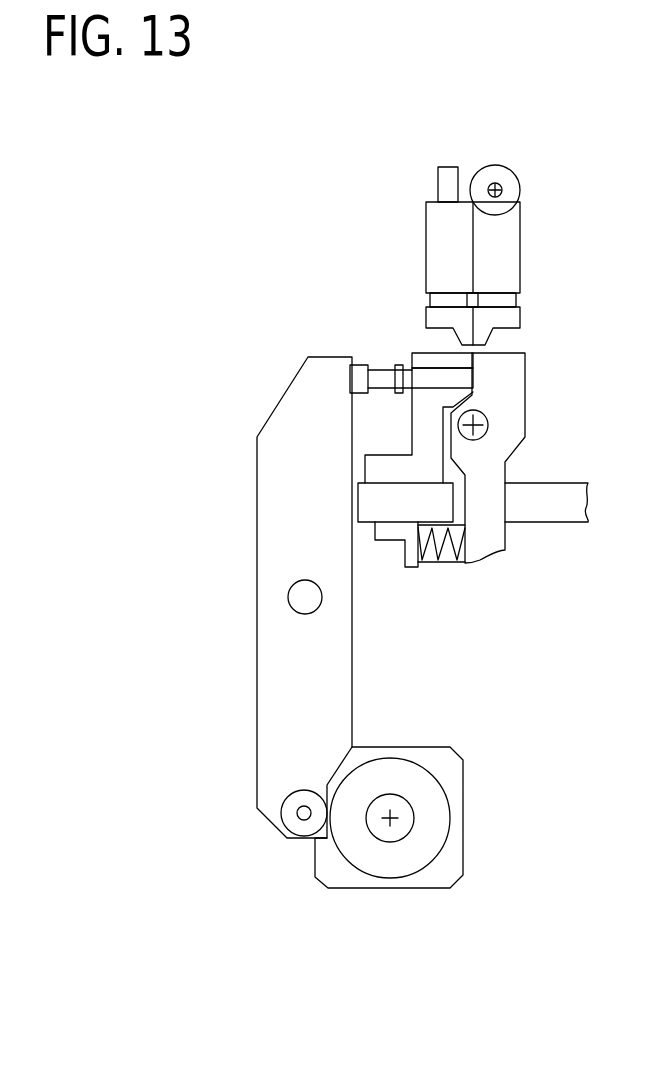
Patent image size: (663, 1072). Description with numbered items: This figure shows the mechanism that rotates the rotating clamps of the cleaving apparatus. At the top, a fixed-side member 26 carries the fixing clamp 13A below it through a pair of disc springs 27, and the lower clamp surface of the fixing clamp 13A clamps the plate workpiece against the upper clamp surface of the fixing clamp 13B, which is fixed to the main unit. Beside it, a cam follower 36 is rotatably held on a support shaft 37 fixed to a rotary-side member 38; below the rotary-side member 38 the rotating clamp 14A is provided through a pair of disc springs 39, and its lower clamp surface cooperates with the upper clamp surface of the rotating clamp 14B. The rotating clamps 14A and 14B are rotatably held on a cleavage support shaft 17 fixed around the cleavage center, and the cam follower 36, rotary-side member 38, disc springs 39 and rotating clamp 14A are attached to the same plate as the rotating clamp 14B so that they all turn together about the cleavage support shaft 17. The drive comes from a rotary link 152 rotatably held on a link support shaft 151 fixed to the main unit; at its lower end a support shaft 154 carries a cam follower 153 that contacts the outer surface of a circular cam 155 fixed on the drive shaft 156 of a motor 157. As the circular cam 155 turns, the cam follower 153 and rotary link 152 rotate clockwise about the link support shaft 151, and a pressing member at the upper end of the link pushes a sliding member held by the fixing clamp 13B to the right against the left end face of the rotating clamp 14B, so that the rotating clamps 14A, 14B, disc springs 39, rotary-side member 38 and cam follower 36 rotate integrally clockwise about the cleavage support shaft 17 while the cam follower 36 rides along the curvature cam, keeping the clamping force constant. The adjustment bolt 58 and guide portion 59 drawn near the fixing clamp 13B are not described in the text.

The fixing clamp 13A is at (428, 352).
The fixing clamp 13B is at (428, 433).
The rotating clamp 14A is at (518, 315).
The rotating clamp 14B is at (513, 387).
The cleavage support shaft 17 is at (483, 421).
The fixed-side member 26 is at (435, 225).
The disc springs 27 is at (432, 302).
The cam follower 36 is at (512, 185).
The support shaft 37 is at (494, 182).
The rotary-side member 38 is at (500, 247).
The disc springs 39 is at (516, 303).
The adjustment bolt 58 is at (385, 375).
The guide portion 59 is at (438, 380).
The link support shaft 151 is at (302, 597).
The rotary link 152 is at (277, 728).
The cam follower 153 is at (293, 825).
The support shaft 154 is at (297, 815).
The circular cam 155 is at (373, 862).
The drive shaft 156 is at (405, 820).
The motor 157 is at (447, 760).